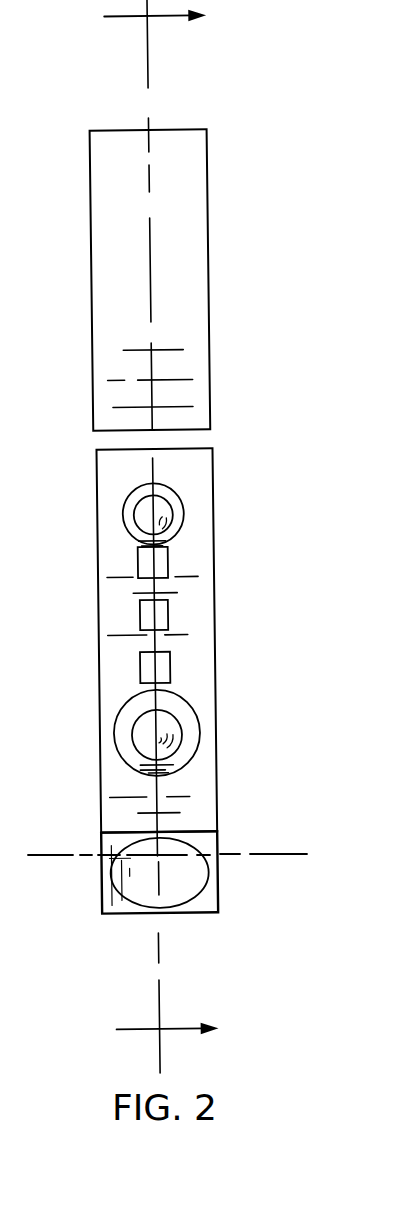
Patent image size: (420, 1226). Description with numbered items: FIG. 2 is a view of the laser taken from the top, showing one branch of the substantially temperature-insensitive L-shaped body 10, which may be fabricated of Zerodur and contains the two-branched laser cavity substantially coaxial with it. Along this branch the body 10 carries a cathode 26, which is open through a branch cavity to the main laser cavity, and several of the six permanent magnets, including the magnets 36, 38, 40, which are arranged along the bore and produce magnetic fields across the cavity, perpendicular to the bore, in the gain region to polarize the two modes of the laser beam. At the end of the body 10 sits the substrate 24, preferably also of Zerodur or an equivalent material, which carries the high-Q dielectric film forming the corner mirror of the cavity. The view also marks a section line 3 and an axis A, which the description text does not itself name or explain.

The L-shaped body 10 is at (242, 405).
The substrate 24 is at (193, 882).
The cathode 26 is at (180, 495).
The permanent magnet 36 is at (162, 562).
The permanent magnet 38 is at (162, 613).
The permanent magnet 40 is at (168, 678).
The section line 3- 3 is at (243, 27).
The axis A is at (273, 855).